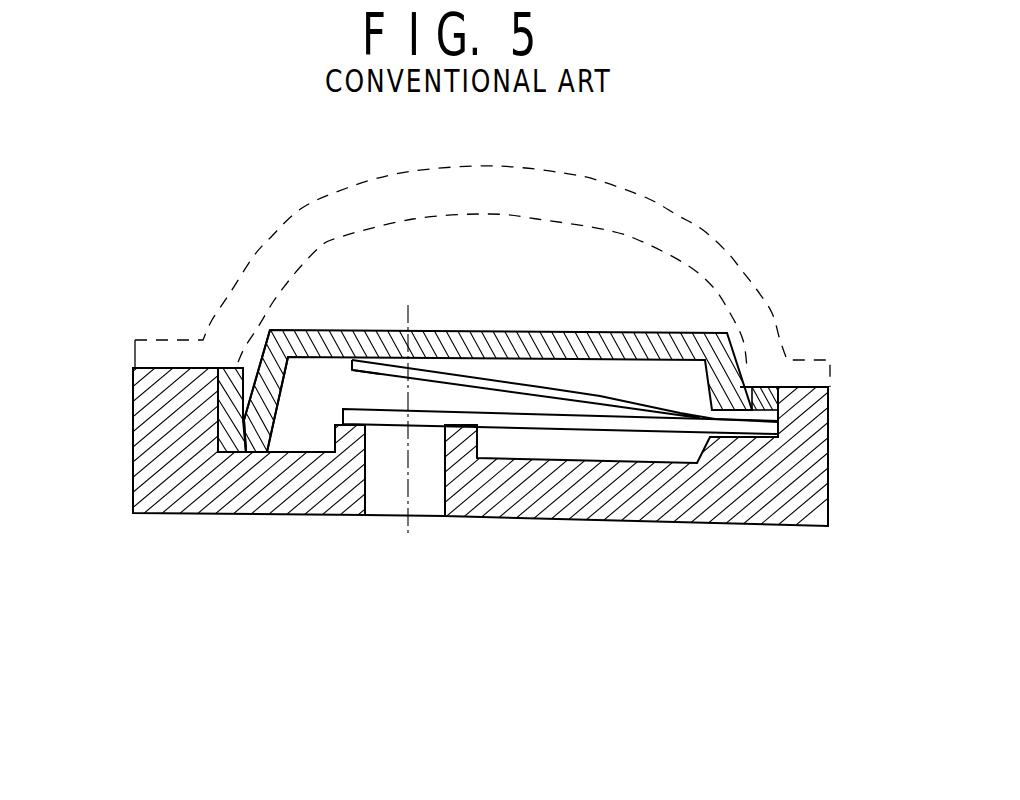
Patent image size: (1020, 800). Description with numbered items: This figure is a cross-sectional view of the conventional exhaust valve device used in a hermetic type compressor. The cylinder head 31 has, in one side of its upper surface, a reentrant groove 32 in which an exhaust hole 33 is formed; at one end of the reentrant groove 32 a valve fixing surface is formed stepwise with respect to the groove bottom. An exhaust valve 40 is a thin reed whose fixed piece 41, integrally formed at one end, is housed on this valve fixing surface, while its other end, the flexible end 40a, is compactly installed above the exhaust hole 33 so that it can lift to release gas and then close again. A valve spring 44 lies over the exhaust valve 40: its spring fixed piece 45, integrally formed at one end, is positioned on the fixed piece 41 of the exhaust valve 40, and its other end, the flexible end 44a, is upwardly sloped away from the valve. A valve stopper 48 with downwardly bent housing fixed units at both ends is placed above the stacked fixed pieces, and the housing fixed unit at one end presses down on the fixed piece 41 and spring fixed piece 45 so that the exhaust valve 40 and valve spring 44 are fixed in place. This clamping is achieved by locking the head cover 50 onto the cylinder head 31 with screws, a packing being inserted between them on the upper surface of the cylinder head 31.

The cylinder head 31 is at (792, 473).
The reentrant groove 32 is at (298, 422).
The exhaust hole 33 is at (383, 473).
The exhaust valve 40 is at (510, 420).
The flexible end of the exhaust valve 40a is at (350, 407).
The fixed piece 41 is at (755, 430).
The valve spring 44 is at (593, 395).
The flexible end of the valve spring 44a is at (363, 360).
The spring fixed piece 45 is at (752, 409).
The valve stopper 48 is at (653, 335).
The head cover 50 is at (745, 293).